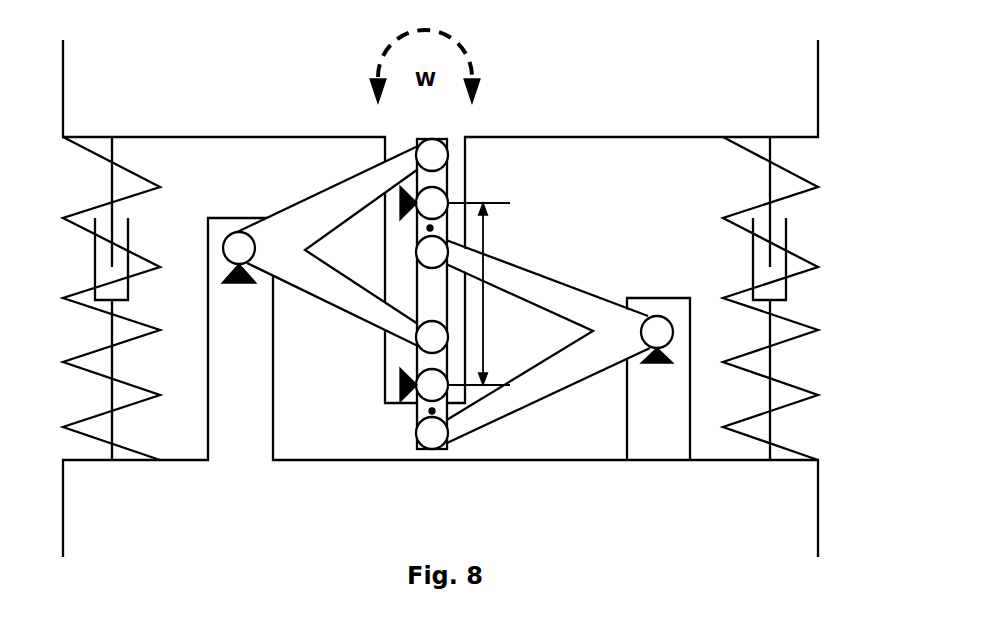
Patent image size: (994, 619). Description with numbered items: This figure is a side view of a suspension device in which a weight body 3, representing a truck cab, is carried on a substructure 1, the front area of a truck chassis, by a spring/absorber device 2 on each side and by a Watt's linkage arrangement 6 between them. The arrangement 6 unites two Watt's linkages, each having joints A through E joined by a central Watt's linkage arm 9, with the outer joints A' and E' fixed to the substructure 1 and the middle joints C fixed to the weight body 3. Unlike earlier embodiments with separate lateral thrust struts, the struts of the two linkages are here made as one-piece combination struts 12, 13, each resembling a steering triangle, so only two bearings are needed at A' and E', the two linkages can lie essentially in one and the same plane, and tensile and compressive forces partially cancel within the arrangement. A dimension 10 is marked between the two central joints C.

The substructure 1 is at (628, 500).
The spring/absorber device 2 is at (112, 486).
The weight body 3 is at (204, 100).
The Watt's linkage 6 is at (540, 186).
The central Watt's linkage arm 9 is at (430, 228).
The stroke distance 10 is at (483, 294).
The combination strut 12 is at (292, 228).
The combination strut 13 is at (609, 316).